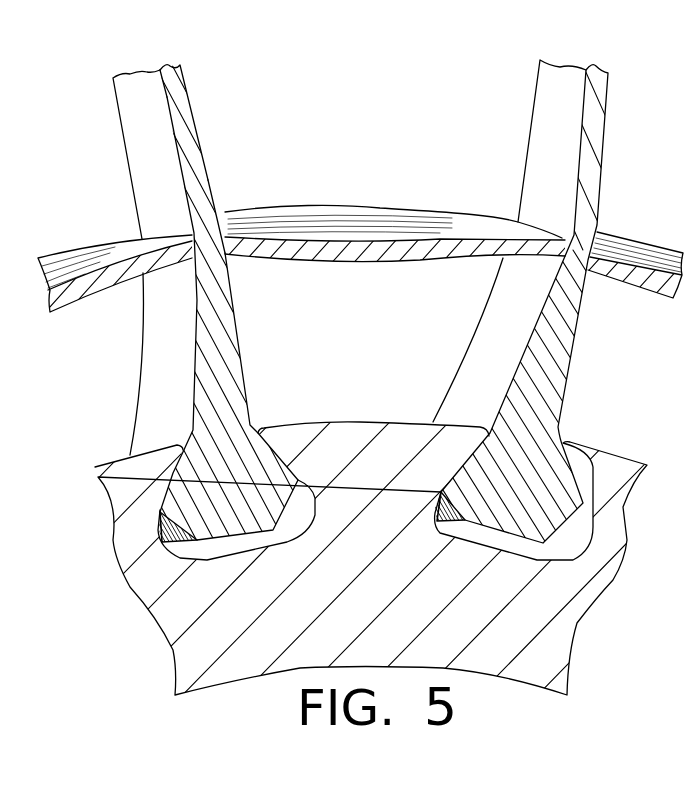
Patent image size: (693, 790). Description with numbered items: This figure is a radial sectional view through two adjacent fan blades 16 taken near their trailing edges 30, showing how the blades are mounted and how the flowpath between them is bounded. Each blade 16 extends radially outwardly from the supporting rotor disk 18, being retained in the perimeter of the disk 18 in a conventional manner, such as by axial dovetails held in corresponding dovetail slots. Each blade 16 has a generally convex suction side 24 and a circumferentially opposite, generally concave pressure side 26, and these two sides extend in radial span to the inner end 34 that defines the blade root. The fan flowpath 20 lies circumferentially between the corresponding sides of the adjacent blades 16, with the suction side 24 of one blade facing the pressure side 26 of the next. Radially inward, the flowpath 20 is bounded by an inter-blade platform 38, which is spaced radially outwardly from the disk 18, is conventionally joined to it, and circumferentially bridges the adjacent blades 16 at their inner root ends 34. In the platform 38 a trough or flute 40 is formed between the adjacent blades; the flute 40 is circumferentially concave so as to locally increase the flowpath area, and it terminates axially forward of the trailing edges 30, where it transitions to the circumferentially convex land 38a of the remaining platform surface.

The fan rotor blade 16 is at (346, 359).
The rotor disk 18 is at (369, 594).
The fan flowpath 20 is at (383, 107).
The suction side 24 is at (346, 305).
The pressure side 26 is at (167, 97).
The trailing edge 30 is at (127, 152).
The inner end 34 is at (219, 216).
The inter-blade platform 38 is at (346, 242).
The land 38a is at (507, 223).
The flute 40 is at (363, 240).